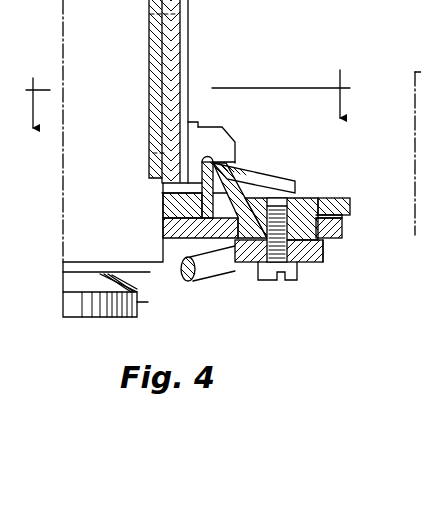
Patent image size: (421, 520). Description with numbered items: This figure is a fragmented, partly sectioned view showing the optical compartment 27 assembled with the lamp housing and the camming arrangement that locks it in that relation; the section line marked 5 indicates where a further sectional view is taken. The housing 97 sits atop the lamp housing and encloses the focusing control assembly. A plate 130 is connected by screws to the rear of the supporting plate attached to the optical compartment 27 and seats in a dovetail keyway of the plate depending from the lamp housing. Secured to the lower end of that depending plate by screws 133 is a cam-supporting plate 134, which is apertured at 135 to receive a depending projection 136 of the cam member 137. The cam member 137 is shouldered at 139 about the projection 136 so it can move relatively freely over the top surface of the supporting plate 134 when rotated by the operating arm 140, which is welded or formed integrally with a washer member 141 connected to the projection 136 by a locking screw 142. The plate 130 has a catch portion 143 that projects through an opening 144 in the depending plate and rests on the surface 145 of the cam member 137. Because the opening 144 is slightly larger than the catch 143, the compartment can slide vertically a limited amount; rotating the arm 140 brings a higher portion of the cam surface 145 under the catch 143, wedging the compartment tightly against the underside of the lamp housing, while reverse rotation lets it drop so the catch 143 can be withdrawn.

The section line 5- 5 is at (188, 83).
The optical compartment 27 is at (68, 163).
The housing 97 is at (147, 73).
The plate 130 is at (176, 32).
The screws 133 is at (163, 223).
The cam-supporting plate 134 is at (343, 229).
The aperture 135 is at (328, 240).
The depending projection 136 is at (302, 200).
The cam member 137 is at (340, 199).
The shoulder 139 is at (342, 219).
The operating arm 140 is at (195, 280).
The washer member 141 is at (320, 265).
The locking screw 142 is at (263, 279).
The catch portion 143 is at (232, 141).
The opening 144 is at (197, 125).
The cam surface 145 is at (265, 171).